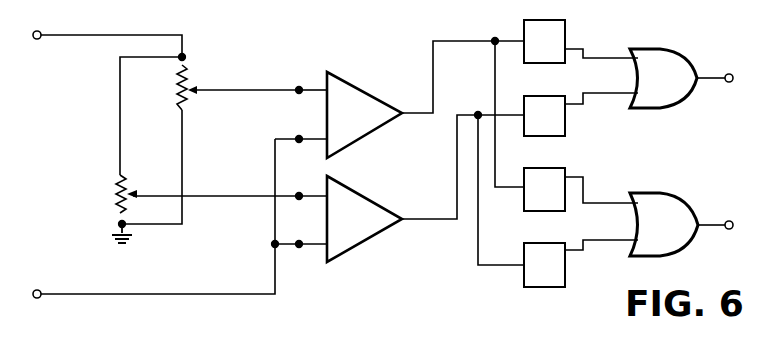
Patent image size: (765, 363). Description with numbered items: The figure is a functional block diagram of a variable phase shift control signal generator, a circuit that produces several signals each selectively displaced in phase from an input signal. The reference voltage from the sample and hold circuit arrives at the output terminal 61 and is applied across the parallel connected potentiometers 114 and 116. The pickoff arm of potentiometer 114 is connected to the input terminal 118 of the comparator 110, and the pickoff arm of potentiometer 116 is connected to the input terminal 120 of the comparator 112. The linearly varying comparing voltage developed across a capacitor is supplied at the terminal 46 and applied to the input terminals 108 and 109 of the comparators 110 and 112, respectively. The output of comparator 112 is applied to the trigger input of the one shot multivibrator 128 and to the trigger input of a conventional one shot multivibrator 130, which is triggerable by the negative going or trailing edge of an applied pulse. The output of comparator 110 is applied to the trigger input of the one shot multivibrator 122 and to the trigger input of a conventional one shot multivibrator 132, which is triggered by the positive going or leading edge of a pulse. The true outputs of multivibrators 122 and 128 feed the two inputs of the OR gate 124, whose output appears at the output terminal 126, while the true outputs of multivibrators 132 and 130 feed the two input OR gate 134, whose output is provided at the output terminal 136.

The output terminal 61 is at (39, 39).
The potentiometer 114 is at (175, 100).
The potentiometer 116 is at (112, 194).
The input terminal 118 is at (297, 87).
The input terminal 108 is at (298, 136).
The input terminal 120 is at (300, 193).
The input terminal 109 is at (298, 247).
The comparator 110 is at (359, 88).
The comparator 112 is at (370, 196).
The terminal 46 is at (41, 290).
The one shot multivibrator 122 is at (567, 25).
The one shot multivibrator 128 is at (567, 131).
The one shot multivibrator 132 is at (567, 172).
The one shot multivibrator 130 is at (567, 277).
The OR gate 124 is at (683, 52).
The OR gate 134 is at (683, 198).
The output terminal 126 is at (729, 73).
The output terminal 136 is at (729, 219).